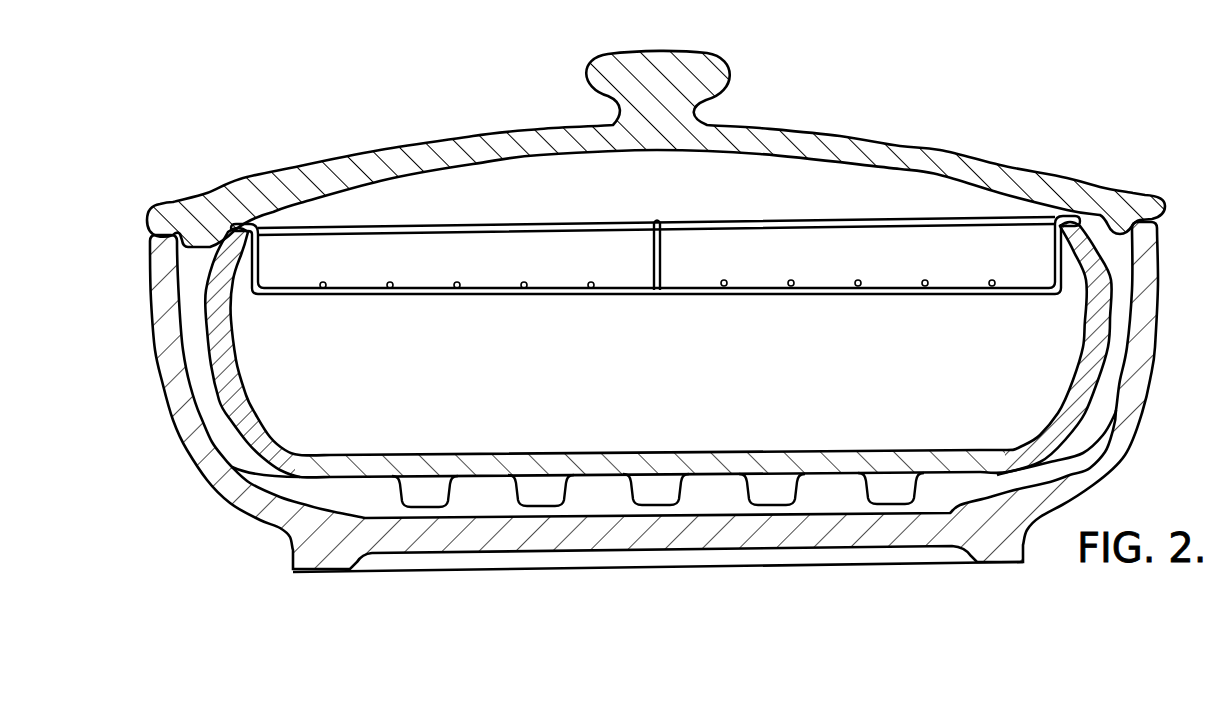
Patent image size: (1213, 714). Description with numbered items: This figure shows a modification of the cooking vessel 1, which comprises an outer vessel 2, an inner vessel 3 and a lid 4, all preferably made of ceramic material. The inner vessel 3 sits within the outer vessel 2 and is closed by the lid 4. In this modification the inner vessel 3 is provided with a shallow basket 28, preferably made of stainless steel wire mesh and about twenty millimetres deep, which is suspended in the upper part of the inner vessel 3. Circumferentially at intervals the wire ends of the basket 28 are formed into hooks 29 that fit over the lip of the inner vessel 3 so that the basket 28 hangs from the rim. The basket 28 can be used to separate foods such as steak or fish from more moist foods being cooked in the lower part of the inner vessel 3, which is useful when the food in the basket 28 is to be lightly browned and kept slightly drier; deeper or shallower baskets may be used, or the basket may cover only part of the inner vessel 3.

The cooking vessel 1 is at (661, 397).
The outer vessel 2 is at (173, 422).
The inner vessel 3 is at (238, 347).
The lid 4 is at (385, 151).
The shallow basket 28 is at (488, 292).
The hooks 29 is at (250, 222).